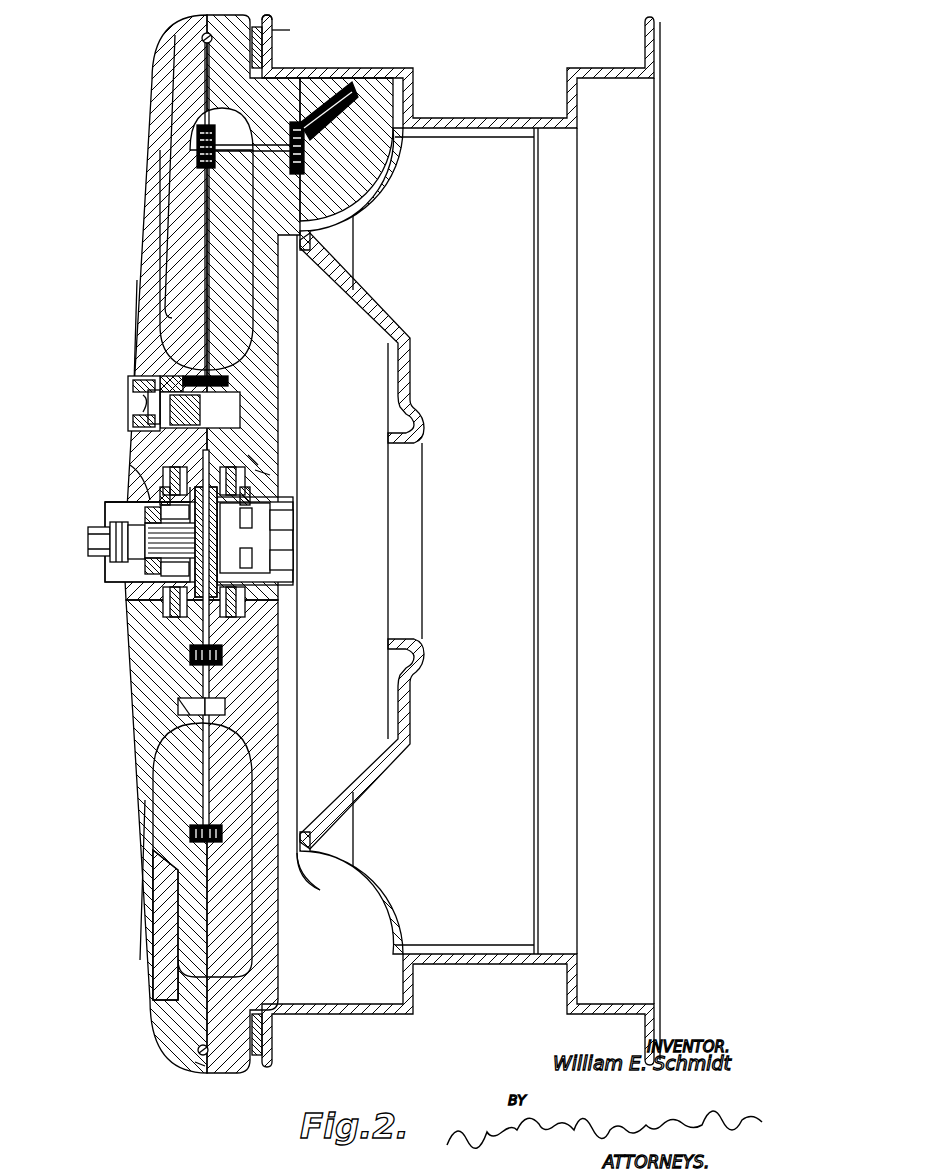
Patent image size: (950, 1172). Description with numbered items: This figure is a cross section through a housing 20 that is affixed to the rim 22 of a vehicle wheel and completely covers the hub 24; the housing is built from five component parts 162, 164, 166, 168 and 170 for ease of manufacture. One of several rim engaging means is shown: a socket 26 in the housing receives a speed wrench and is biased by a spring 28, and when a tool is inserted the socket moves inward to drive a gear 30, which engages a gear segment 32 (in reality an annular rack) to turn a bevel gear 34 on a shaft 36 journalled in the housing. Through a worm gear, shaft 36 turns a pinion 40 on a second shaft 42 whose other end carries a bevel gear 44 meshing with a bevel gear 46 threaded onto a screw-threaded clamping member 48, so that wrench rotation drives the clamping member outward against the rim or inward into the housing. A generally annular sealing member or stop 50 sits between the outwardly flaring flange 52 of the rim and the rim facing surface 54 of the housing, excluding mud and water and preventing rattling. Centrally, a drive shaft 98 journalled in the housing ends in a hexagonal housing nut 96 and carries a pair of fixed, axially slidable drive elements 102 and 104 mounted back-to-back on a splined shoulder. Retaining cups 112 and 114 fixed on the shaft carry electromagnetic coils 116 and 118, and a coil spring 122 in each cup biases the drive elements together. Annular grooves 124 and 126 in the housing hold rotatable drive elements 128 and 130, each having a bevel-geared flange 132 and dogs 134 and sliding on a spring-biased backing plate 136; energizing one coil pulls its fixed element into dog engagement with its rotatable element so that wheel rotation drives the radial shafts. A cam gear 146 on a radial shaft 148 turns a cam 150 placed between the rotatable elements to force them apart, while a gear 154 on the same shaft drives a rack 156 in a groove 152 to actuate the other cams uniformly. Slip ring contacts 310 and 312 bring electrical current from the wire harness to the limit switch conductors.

The housing 20 is at (150, 100).
The rim 22 is at (412, 80).
The hub 24 is at (395, 330).
The socket 26 is at (135, 395).
The spring 28 is at (145, 405).
The gear 30 is at (200, 410).
The gear segment 32 is at (180, 377).
The bevel gear 34 is at (228, 381).
The shaft 36 is at (211, 322).
The pinion 40 is at (196, 148).
The shaft 42 is at (258, 165).
The bevel gear 44 is at (322, 168).
The bevel gear 46 is at (345, 105).
The clamping member 48 is at (330, 88).
The sealing member or stop 50 is at (292, 31).
The outwardly flaring flange 52 is at (263, 50).
The rim facing surface 54 is at (268, 15).
The hexagonal housing nut 96 is at (88, 543).
The drive shaft 98 is at (275, 528).
The drive element 102 is at (165, 600).
The drive element 104 is at (268, 590).
The retaining cup 112 is at (150, 570).
The retaining cup 114 is at (272, 565).
The electromagnetic coil 116 is at (165, 510).
The electromagnetic coil 118 is at (245, 504).
The coil spring 122 is at (280, 542).
The annular groove 124 is at (150, 470).
The annular groove 126 is at (265, 472).
The rotatable drive element 128 is at (180, 470).
The rotatable drive element 130 is at (250, 458).
The flange 132 is at (225, 616).
The dogs 134 is at (232, 466).
The backing plate 136 is at (165, 490).
The cam gear 146 is at (222, 835).
The shaft 148 is at (210, 772).
The cam 150 is at (182, 616).
The groove 152 is at (190, 700).
The gear 154 is at (225, 702).
The rack 156 is at (222, 656).
The housing component part 162 is at (150, 975).
The housing component part 164 is at (200, 1065).
The housing component part 166 is at (175, 885).
The housing component part 168 is at (232, 936).
The housing component part 170 is at (280, 818).
The slip ring contact 310 is at (110, 527).
The slip ring contact 312 is at (110, 560).